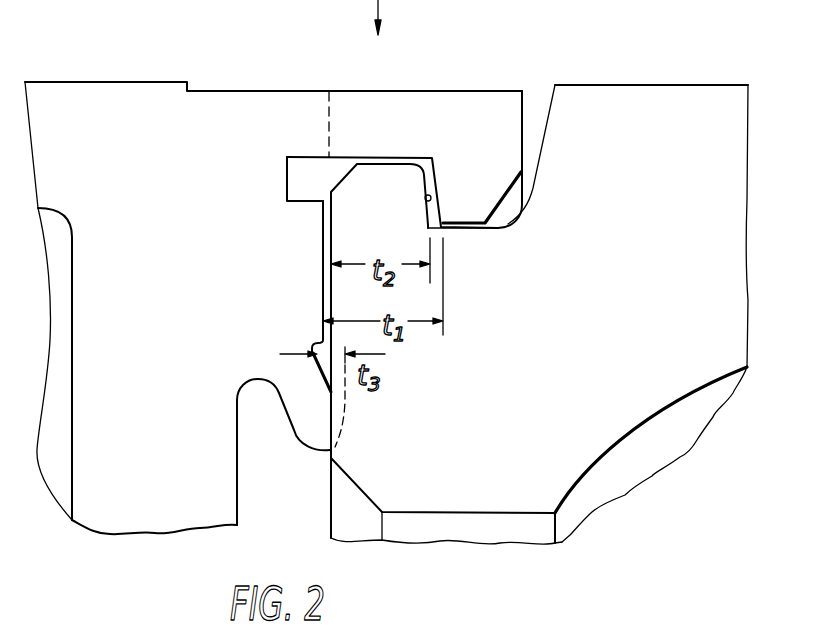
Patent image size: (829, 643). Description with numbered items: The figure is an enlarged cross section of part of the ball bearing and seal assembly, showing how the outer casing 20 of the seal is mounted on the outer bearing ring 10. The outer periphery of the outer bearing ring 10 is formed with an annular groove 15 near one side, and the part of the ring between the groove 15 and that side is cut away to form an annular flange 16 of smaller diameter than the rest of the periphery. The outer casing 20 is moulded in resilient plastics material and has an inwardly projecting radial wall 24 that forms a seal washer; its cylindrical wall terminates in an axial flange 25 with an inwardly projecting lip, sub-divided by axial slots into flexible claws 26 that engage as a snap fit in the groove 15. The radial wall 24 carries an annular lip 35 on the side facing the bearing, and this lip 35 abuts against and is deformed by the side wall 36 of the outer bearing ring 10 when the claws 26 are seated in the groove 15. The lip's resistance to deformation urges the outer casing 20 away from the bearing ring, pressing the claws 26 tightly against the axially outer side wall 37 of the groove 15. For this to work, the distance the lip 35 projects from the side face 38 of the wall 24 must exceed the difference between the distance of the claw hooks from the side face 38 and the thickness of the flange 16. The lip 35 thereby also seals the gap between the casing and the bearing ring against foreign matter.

The outer bearing ring 10 is at (642, 102).
The annular groove 15 is at (500, 213).
The annular flange 16 is at (384, 182).
The outer casing 20 is at (115, 80).
The radial wall 24 is at (85, 335).
The axial flange 25 is at (371, 107).
The claws 26 is at (483, 186).
The annular lip 35 is at (292, 431).
The side wall 36 is at (320, 378).
The axially outer side wall 37 is at (426, 196).
The side face 38 is at (323, 287).